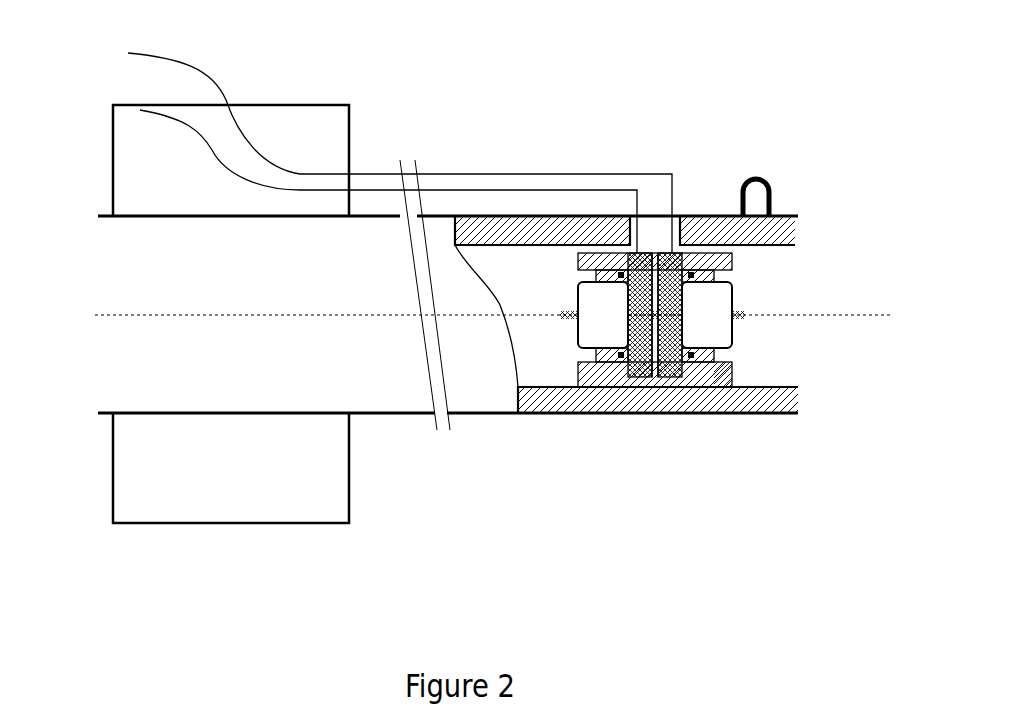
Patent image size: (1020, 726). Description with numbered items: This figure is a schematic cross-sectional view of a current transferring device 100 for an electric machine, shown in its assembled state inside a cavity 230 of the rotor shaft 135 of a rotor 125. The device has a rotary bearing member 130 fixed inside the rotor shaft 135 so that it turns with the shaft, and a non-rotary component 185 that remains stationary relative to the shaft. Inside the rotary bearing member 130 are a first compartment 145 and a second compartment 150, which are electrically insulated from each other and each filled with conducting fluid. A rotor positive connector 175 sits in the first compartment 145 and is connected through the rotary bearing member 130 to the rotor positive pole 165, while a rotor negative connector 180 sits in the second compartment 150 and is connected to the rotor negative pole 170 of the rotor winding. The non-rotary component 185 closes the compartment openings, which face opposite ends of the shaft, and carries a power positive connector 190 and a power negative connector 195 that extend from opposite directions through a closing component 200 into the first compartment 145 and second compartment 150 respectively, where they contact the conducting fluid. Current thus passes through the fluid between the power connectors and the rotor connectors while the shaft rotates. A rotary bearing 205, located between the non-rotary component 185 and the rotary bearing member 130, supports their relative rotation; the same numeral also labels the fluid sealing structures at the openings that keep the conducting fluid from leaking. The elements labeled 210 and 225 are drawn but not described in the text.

The current transferring device 100 is at (700, 185).
The rotor 125 is at (419, 122).
The rotary bearing member 130 is at (770, 213).
The rotor shaft 135 is at (473, 362).
The first compartment 145 is at (676, 390).
The second compartment 150 is at (637, 395).
The rotor positive pole 165 is at (381, 149).
The rotor negative pole 170 is at (113, 105).
The rotor positive connector 175 is at (842, 312).
The rotor negative connector 180 is at (487, 282).
The non-rotary component 185 is at (732, 263).
The power positive connector 190 is at (797, 413).
The power negative connector 195 is at (647, 405).
The closing component 200 is at (772, 342).
The rotary bearing 205 is at (608, 400).
The base plate 210 is at (618, 412).
The passage 225 is at (155, 183).
The cavity 230 is at (483, 265).